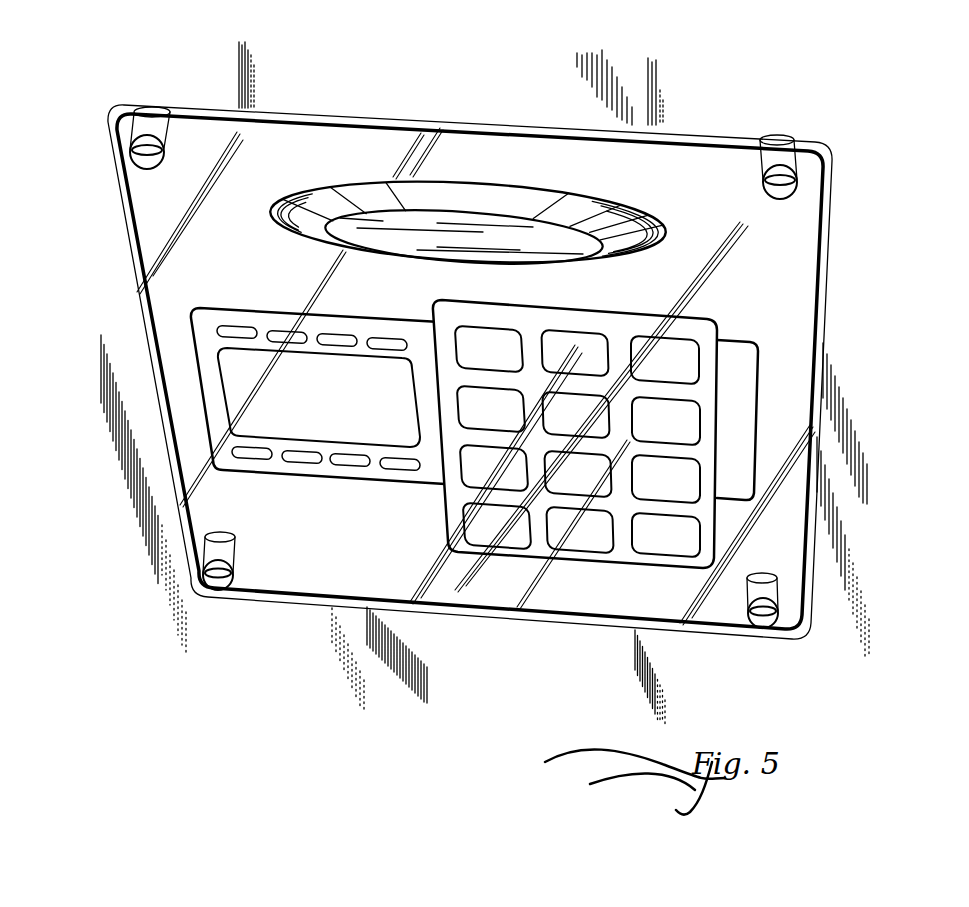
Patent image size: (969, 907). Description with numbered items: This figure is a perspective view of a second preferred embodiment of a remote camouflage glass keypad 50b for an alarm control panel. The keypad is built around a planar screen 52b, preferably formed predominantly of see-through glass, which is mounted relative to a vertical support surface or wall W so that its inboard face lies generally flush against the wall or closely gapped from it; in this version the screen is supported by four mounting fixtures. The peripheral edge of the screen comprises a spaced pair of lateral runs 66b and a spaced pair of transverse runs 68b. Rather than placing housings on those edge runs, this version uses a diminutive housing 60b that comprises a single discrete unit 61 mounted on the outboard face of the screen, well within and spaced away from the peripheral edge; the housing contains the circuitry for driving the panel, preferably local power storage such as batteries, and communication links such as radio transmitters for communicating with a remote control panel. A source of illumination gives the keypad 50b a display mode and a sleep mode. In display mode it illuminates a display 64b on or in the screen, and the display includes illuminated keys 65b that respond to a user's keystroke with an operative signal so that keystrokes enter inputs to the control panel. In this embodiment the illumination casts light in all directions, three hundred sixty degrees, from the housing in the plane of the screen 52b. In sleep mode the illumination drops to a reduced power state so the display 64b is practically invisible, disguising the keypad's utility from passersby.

The wall W is at (247, 67).
The glass keypad 50b is at (473, 364).
The planar screen 52b is at (142, 247).
The housing 60b is at (500, 200).
The single discrete unit 61 is at (468, 176).
The display 64b is at (660, 327).
The illuminated key 65b is at (591, 337).
The lateral run 66b is at (131, 277).
The transverse run 68b is at (686, 136).